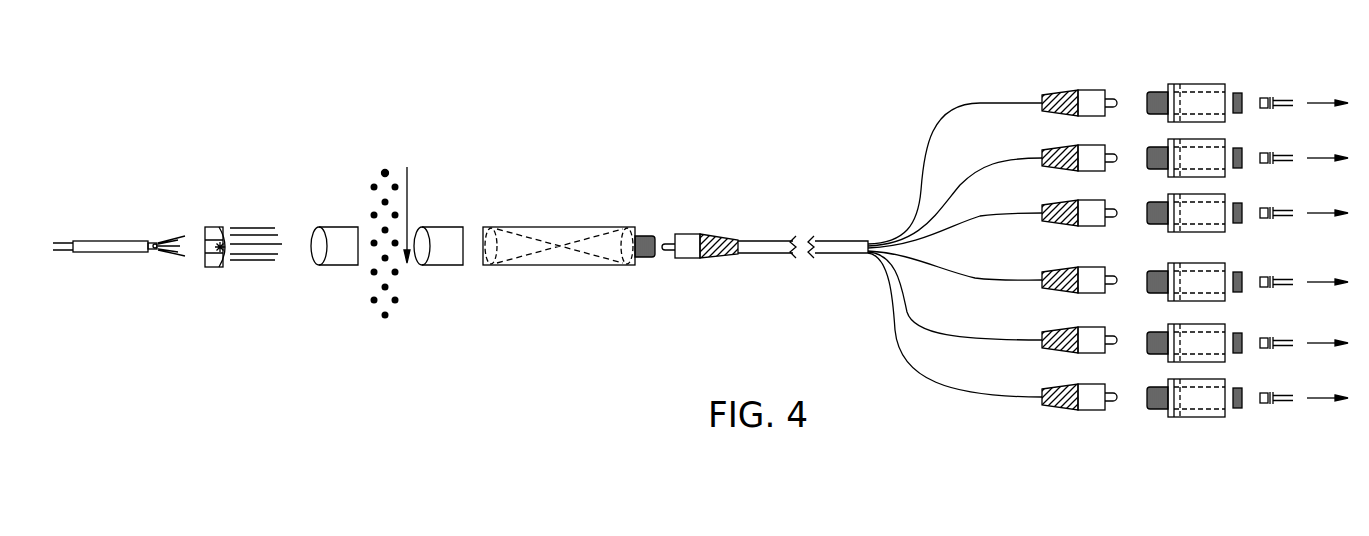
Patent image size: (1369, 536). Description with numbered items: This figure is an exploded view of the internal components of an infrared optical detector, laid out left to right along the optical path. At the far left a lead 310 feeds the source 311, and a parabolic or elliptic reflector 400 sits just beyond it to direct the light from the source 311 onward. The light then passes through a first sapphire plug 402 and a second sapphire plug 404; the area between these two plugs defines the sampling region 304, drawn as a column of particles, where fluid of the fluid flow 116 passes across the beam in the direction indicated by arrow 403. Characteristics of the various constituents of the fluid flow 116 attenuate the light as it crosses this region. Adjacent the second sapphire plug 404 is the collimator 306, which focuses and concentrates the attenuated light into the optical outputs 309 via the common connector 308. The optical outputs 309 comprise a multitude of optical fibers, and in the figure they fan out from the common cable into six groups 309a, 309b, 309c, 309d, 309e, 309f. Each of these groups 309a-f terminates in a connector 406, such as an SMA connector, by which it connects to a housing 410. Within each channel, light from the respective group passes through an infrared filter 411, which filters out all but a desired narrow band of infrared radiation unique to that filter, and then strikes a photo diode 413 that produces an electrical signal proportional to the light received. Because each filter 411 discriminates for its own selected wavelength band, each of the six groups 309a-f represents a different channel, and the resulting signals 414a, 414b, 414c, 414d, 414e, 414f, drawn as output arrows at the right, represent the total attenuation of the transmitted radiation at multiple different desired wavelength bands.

The optical fiber 310 is at (64, 241).
The source 311 is at (125, 240).
The parabolic reflector 400 is at (215, 226).
The first sapphire plug 402 is at (333, 226).
The fluid flow 116 is at (383, 156).
The sampling region 304 is at (372, 268).
The arrow 403 is at (407, 190).
The second sapphire plug 404 is at (435, 266).
The collimator 306 is at (550, 226).
The common connector 308 is at (685, 260).
The optical outputs 309 is at (837, 240).
The first fiber group 309a is at (1035, 102).
The second fiber group 309b is at (1035, 157).
The third fiber group 309c is at (1035, 212).
The fourth fiber group 309d is at (1035, 279).
The fifth fiber group 309e is at (1035, 339).
The sixth fiber group 309f is at (1035, 396).
The connector 406 is at (1093, 89).
The housing 410 is at (1190, 84).
The infrared filter 411 is at (1240, 410).
The photo diode 413 is at (1267, 405).
The attenuation signal 414a is at (1312, 102).
The attenuation signal 414b is at (1312, 157).
The attenuation signal 414c is at (1312, 212).
The attenuation signal 414d is at (1312, 281).
The attenuation signal 414e is at (1312, 342).
The attenuation signal 414f is at (1312, 397).